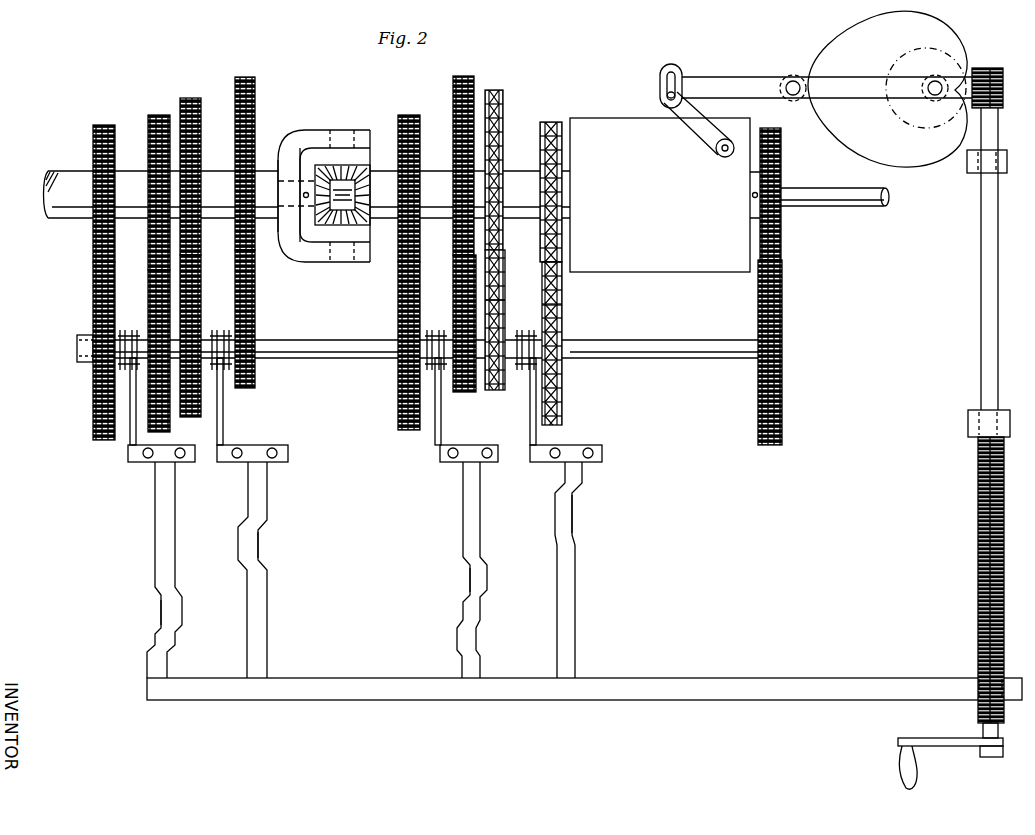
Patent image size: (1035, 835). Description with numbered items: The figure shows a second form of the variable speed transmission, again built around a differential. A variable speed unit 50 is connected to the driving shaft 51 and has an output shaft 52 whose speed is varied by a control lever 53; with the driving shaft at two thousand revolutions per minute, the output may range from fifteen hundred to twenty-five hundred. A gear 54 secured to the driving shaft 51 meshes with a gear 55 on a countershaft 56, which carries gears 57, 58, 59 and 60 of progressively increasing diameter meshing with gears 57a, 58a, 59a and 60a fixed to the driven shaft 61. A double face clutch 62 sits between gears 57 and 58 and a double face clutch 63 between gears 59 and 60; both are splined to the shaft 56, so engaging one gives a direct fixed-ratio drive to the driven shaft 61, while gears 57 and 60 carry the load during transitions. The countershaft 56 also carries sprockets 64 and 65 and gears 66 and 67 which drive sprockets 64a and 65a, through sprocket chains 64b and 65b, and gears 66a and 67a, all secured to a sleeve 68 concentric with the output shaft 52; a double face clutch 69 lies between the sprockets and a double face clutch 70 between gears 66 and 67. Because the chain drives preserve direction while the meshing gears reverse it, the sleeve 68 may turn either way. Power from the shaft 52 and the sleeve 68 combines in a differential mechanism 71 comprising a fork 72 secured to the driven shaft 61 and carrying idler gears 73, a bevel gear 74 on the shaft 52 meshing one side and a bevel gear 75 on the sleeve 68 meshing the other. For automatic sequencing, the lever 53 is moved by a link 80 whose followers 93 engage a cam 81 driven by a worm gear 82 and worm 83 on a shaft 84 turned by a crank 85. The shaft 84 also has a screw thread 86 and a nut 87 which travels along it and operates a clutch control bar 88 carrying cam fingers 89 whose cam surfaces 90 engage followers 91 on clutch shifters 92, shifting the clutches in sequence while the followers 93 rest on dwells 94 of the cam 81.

The variable speed unit 50 is at (606, 122).
The driving shaft 51 is at (825, 205).
The output shaft 52 is at (340, 208).
The control lever 53 is at (690, 128).
The gear 54 is at (782, 157).
The gear 55 is at (783, 300).
The shaft 56 is at (648, 358).
The gear 57 is at (256, 379).
The gear 57a is at (245, 77).
The gear 58 is at (200, 414).
The gear 58a is at (190, 98).
The gear 59 is at (148, 430).
The gear 59a is at (158, 115).
The gear 60 is at (92, 424).
The gear 60a is at (102, 125).
The driven shaft 61 is at (62, 214).
The double face clutch 62 is at (256, 347).
The double face clutch 63 is at (90, 355).
The sprocket 64 is at (562, 404).
The sprocket 64a is at (548, 122).
The sprocket chain 64b is at (563, 304).
The sprocket 65 is at (502, 392).
The sprocket 65a is at (500, 90).
The sprocket chain 65b is at (504, 302).
The gear 66 is at (460, 392).
The gear 66a is at (460, 76).
The gear 67 is at (398, 426).
The gear 67a is at (405, 115).
The sleeve 68 is at (438, 172).
The double face clutch 69 is at (560, 345).
The double face clutch 70 is at (398, 344).
The differential mechanism 71 is at (321, 120).
The fork 72 is at (300, 252).
The idler gears 73 is at (346, 178).
The bevel gear 74 is at (302, 232).
The bevel gear 75 is at (368, 224).
The link 80 is at (727, 77).
The cam 81 is at (836, 42).
The worm gear 82 is at (907, 55).
The worm 83 is at (1000, 68).
The shaft 84 is at (980, 273).
The crank 85 is at (926, 748).
The screw thread 86 is at (978, 528).
The nut 87 is at (978, 690).
The clutch control bar 88 is at (761, 678).
The cam fingers 89 is at (153, 540).
The cam surfaces 90 is at (206, 590).
The followers 91 is at (181, 460).
The clutch shifters 92 is at (96, 441).
The followers 93 is at (790, 78).
The dwells 94 is at (797, 74).